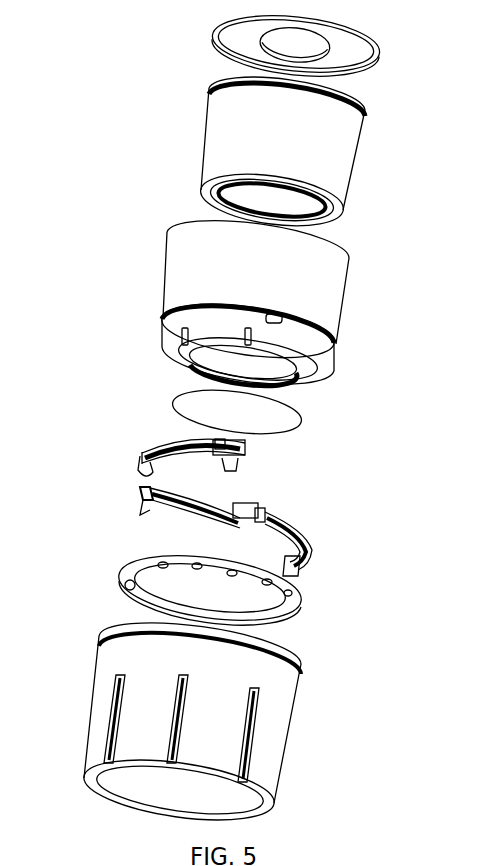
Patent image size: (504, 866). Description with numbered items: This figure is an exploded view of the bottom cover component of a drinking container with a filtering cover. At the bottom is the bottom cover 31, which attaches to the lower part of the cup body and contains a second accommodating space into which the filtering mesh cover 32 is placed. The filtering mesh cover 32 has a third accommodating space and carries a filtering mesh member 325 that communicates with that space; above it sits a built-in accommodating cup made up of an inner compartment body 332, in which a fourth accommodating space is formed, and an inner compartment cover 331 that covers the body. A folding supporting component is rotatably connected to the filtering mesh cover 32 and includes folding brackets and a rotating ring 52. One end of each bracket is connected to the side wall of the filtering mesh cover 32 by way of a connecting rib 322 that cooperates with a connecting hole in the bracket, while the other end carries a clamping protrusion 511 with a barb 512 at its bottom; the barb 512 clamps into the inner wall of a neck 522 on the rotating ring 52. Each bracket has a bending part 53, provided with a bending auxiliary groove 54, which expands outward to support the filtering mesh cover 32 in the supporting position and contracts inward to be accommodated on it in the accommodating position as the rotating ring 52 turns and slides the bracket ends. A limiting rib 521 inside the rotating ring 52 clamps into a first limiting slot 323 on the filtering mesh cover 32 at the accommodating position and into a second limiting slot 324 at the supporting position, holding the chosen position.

The bottom cover 31 is at (137, 704).
The filtering mesh cover 32 is at (317, 272).
The connecting rib 322 is at (285, 320).
The first limiting slot 323 is at (330, 353).
The second limiting slot 324 is at (163, 323).
The filtering mesh member 325 is at (293, 413).
The inner compartment cover 331 is at (380, 53).
The inner compartment body 332 is at (317, 145).
The rotating ring 52 is at (147, 560).
The limiting rib 521 is at (125, 583).
The neck 522 is at (240, 562).
The bending part 53 is at (147, 443).
The clamping protrusion 511 is at (145, 452).
The barb 512 is at (243, 463).
The bending auxiliary groove 54 is at (200, 440).